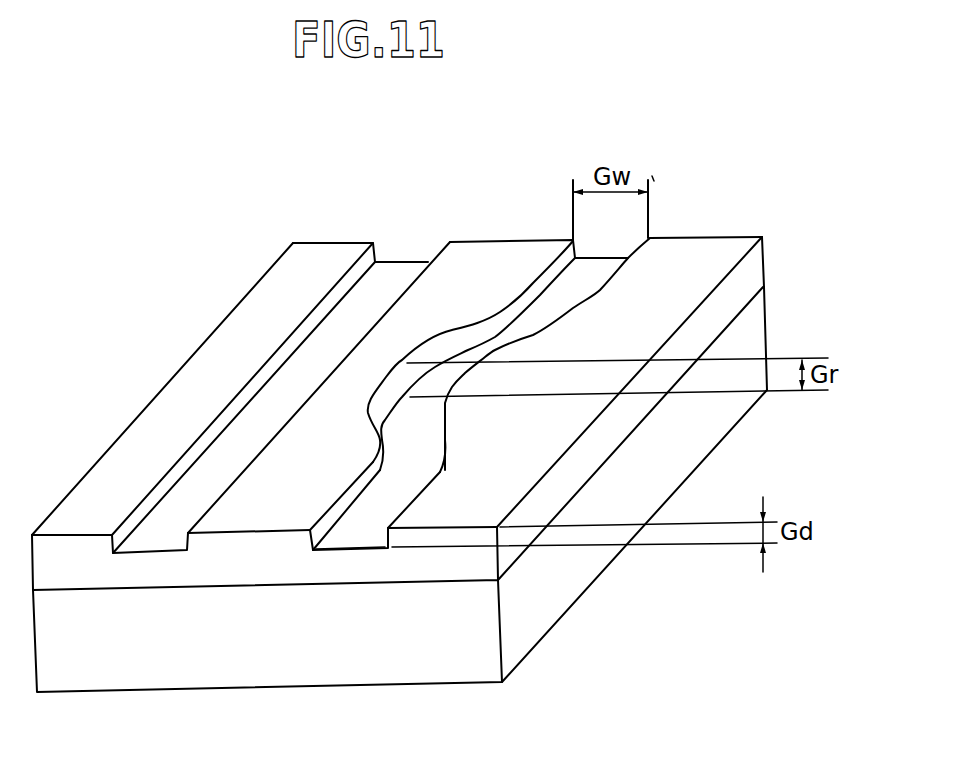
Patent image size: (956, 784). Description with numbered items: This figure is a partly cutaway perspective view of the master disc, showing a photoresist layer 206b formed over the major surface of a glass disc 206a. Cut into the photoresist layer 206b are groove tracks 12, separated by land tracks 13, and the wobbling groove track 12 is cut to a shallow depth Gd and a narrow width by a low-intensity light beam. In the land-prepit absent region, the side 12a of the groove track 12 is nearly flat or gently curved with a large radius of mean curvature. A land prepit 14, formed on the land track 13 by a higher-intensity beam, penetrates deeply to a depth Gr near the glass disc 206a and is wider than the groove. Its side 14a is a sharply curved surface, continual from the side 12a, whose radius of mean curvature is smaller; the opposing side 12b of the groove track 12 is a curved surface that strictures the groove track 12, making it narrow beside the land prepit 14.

The groove track 12 is at (255, 420).
The side of the groove track 12a is at (331, 518).
The side of the groove track facing the land prepit 12b is at (447, 437).
The land track 13 is at (478, 255).
The land prepit 14 is at (405, 418).
The side of the land prepit 14a is at (436, 357).
The glass disc 206a is at (759, 322).
The photoresist layer 206b is at (758, 258).